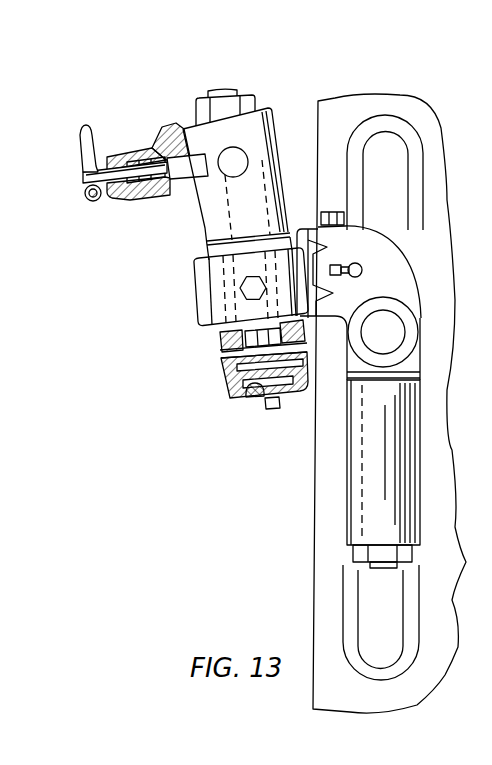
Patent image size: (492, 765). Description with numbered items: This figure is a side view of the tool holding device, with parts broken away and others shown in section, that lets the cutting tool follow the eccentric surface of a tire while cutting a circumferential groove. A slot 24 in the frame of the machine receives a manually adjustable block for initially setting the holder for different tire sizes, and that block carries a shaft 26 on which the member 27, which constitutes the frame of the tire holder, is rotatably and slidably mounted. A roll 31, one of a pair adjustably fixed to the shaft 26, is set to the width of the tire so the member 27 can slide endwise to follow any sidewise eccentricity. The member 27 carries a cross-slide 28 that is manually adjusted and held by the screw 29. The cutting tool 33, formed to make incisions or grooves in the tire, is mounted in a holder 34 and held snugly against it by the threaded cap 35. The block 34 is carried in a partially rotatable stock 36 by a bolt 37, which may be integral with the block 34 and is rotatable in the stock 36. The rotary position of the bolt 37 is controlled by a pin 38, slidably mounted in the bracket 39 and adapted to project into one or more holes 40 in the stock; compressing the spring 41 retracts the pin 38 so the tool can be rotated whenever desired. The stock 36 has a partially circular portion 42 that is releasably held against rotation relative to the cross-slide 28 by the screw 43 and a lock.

The slot 24 is at (398, 218).
The shaft 26 is at (360, 303).
The member 27 is at (345, 273).
The cross-slide 28 is at (195, 298).
The screw 29 is at (333, 212).
The roll 31 is at (395, 470).
The cutting tool 33 is at (271, 409).
The holder 34 is at (230, 395).
The threaded cap 35 is at (250, 392).
The stock 36 is at (203, 218).
The bolt 37 is at (229, 90).
The pin 38 is at (162, 148).
The bracket 39 is at (185, 125).
The holes 40 is at (240, 150).
The spring 41 is at (143, 198).
The partially circular portion 42 is at (207, 247).
The screw 43 is at (253, 300).